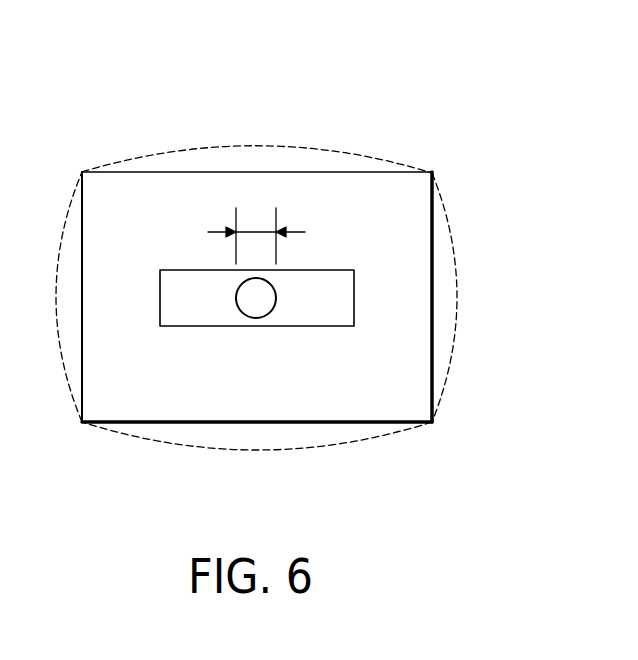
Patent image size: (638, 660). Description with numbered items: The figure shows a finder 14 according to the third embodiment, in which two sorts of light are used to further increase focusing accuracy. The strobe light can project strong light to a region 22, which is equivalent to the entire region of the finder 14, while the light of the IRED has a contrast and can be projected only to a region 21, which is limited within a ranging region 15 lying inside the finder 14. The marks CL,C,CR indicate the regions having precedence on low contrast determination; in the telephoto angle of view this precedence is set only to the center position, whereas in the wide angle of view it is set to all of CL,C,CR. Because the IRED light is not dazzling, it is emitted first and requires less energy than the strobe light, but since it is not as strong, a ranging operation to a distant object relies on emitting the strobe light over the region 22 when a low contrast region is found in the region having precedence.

The finder 14 is at (303, 422).
The ranging region 15 is at (193, 326).
The region 21 is at (276, 298).
The region 22 is at (443, 377).
The regions having precedence on low contrast determination CL,C,CR is at (252, 232).